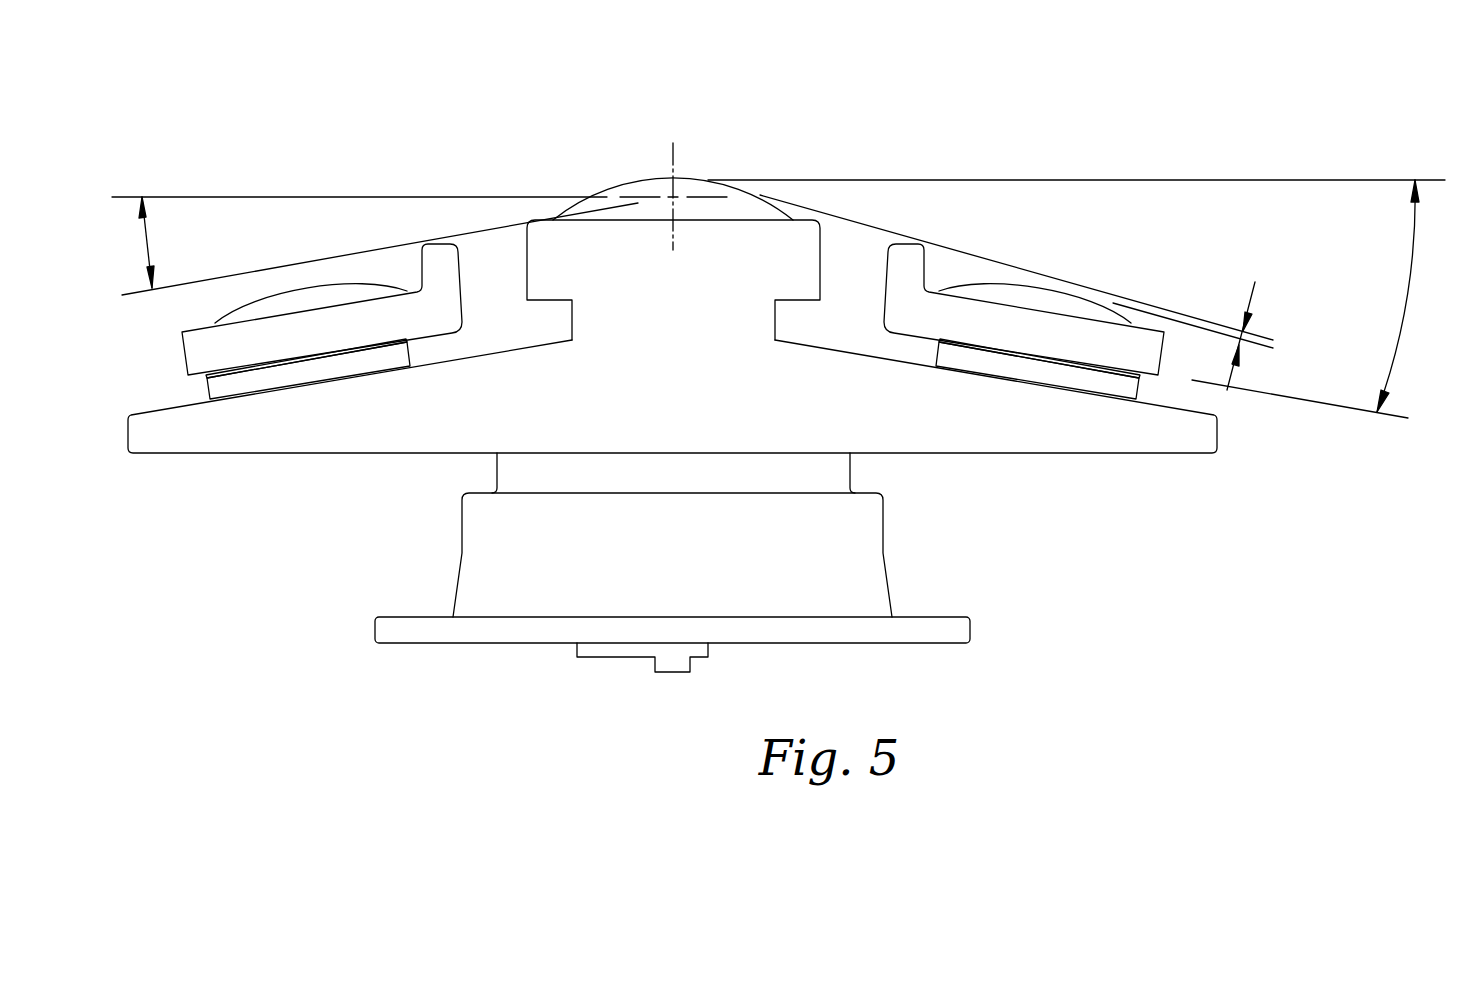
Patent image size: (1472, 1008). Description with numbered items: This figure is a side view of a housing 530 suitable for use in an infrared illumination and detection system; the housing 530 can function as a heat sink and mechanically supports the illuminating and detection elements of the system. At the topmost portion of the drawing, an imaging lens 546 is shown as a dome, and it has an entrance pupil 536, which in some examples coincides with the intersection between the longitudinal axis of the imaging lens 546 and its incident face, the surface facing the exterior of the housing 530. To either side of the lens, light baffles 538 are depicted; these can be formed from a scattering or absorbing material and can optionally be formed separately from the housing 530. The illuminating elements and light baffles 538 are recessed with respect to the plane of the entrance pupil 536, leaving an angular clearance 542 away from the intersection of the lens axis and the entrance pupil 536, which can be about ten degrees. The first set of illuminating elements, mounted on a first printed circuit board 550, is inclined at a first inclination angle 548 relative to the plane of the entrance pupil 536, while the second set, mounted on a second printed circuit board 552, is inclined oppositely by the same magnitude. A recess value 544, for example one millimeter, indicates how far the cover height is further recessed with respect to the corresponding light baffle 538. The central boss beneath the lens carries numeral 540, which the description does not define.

The housing 530 is at (277, 455).
The entrance pupil 536 is at (590, 176).
The light baffles 538 is at (443, 356).
The central boss housing 540 is at (889, 476).
The angular clearance 542 is at (142, 244).
The recess value 544 is at (1257, 288).
The imaging lens 546 is at (652, 180).
The first inclination angle 548 is at (1408, 292).
The first printed circuit board 550 is at (317, 338).
The second printed circuit board 552 is at (1029, 338).